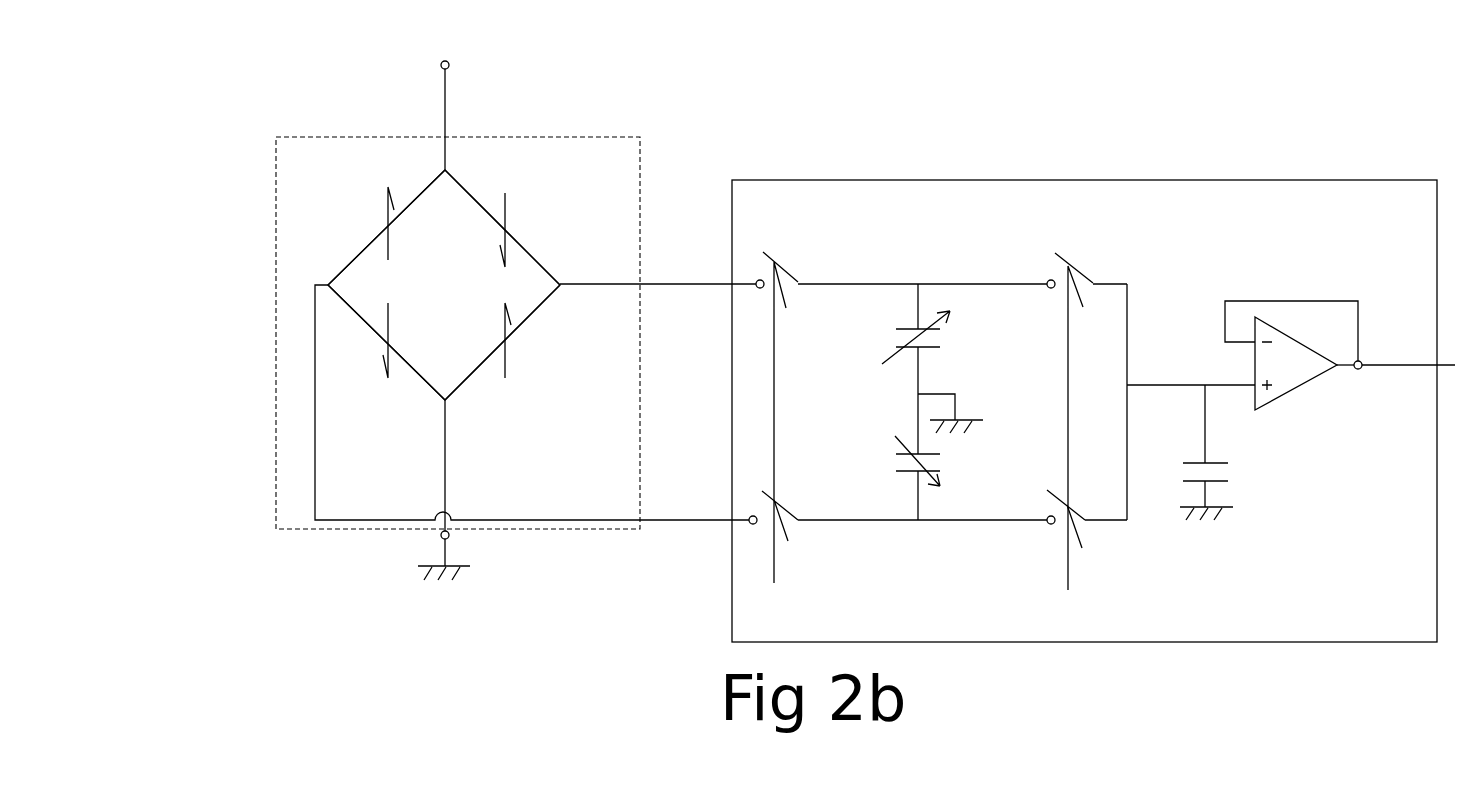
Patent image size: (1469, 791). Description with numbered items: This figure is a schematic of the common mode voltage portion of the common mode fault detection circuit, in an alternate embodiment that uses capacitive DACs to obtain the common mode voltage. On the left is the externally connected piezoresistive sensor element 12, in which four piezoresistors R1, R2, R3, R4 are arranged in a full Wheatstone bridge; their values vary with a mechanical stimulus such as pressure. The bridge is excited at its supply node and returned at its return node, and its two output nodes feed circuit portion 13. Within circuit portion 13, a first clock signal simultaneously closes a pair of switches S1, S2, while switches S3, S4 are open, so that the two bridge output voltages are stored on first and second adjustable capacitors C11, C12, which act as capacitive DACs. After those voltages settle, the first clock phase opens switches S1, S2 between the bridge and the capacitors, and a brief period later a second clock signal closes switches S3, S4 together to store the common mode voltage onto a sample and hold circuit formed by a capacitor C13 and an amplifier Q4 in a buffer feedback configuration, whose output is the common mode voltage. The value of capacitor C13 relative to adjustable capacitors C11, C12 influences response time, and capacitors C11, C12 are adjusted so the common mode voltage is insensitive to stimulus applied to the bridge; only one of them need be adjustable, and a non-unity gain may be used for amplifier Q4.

The piezoresistive sensor element 12 is at (276, 140).
The circuit portion 13 is at (1092, 180).
The piezoresistor R1 is at (502, 227).
The piezoresistor R2 is at (502, 342).
The piezoresistor R3 is at (382, 227).
The piezoresistor R4 is at (386, 342).
The switch S1 is at (905, 414).
The switch S2 is at (904, 510).
The switch S3 is at (1087, 417).
The switch S4 is at (1087, 514).
The adjustable capacitor C11 is at (939, 339).
The adjustable capacitor C12 is at (945, 457).
The capacitor C13 is at (1237, 452).
The amplifier Q4 is at (1293, 370).